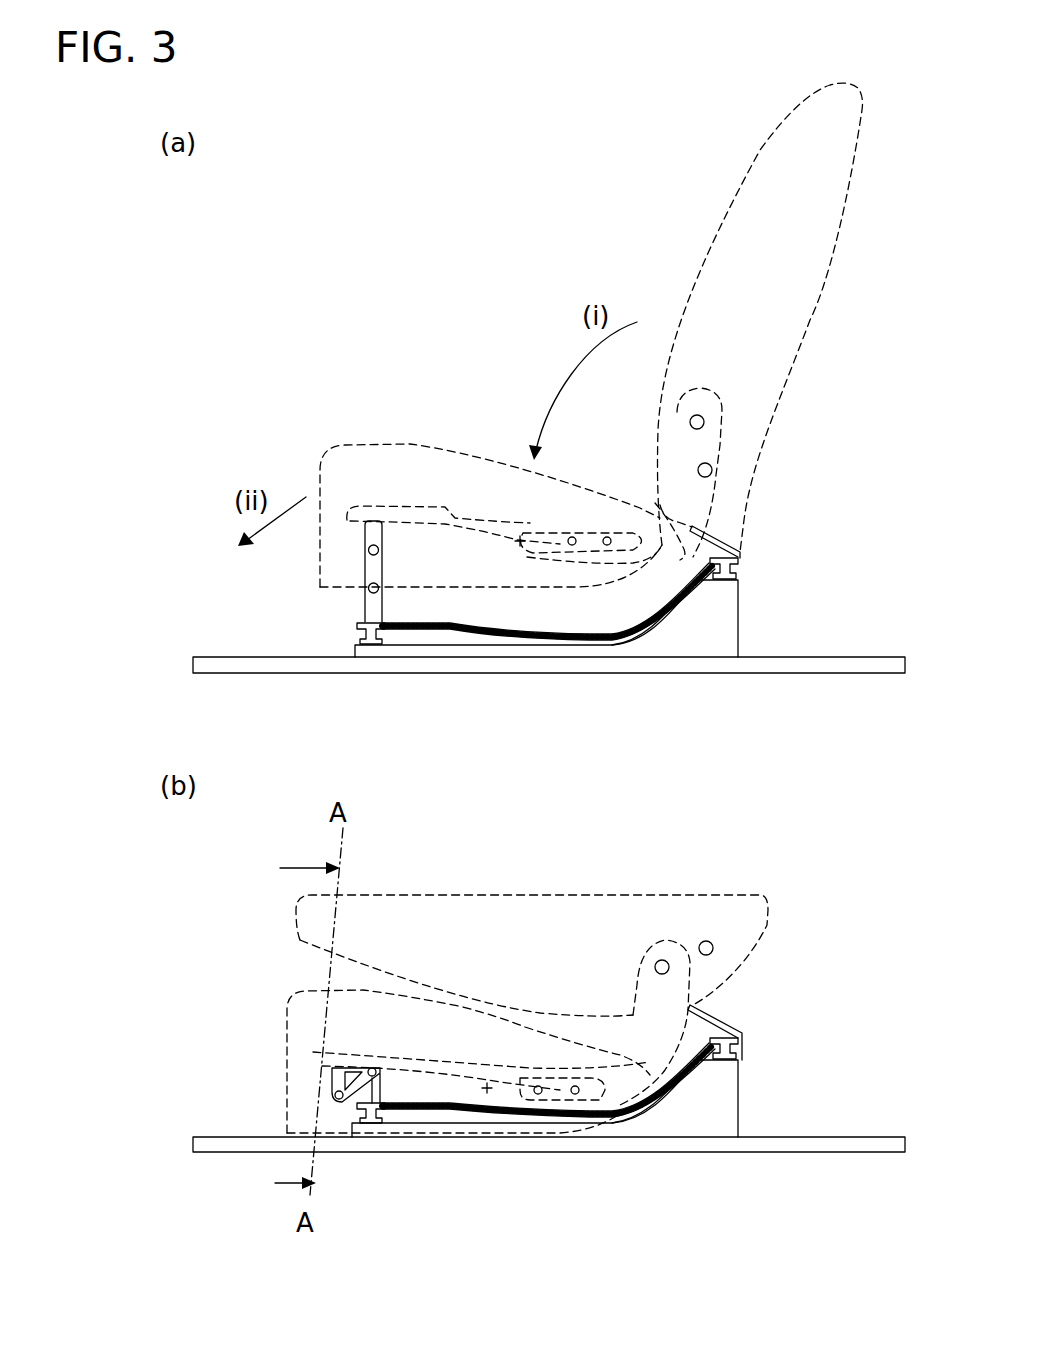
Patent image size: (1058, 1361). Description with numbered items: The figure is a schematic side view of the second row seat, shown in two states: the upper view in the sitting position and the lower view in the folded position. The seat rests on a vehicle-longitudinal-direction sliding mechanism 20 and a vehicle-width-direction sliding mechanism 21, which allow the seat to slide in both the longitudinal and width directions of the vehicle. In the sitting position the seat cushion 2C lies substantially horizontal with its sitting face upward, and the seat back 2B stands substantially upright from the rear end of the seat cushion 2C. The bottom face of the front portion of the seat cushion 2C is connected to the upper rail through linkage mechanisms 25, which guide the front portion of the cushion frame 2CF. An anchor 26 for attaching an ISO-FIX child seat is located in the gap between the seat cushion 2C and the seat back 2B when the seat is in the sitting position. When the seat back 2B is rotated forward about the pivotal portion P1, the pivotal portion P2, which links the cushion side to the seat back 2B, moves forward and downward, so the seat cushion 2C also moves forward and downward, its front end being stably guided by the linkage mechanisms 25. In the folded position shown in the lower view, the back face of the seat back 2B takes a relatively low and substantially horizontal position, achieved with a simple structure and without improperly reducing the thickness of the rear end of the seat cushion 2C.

The vehicle-longitudinal-direction sliding mechanism 20 is at (686, 692).
The vehicle-width-direction sliding mechanism 21 is at (335, 628).
The linkage mechanism 25 is at (370, 602).
The anchor 26 is at (720, 540).
The seat back 2B is at (785, 288).
The seat cushion 2C is at (397, 460).
The cushion frame 2CF is at (452, 503).
The pivotal portion P1 is at (712, 473).
The pivotal portion P2 is at (705, 425).